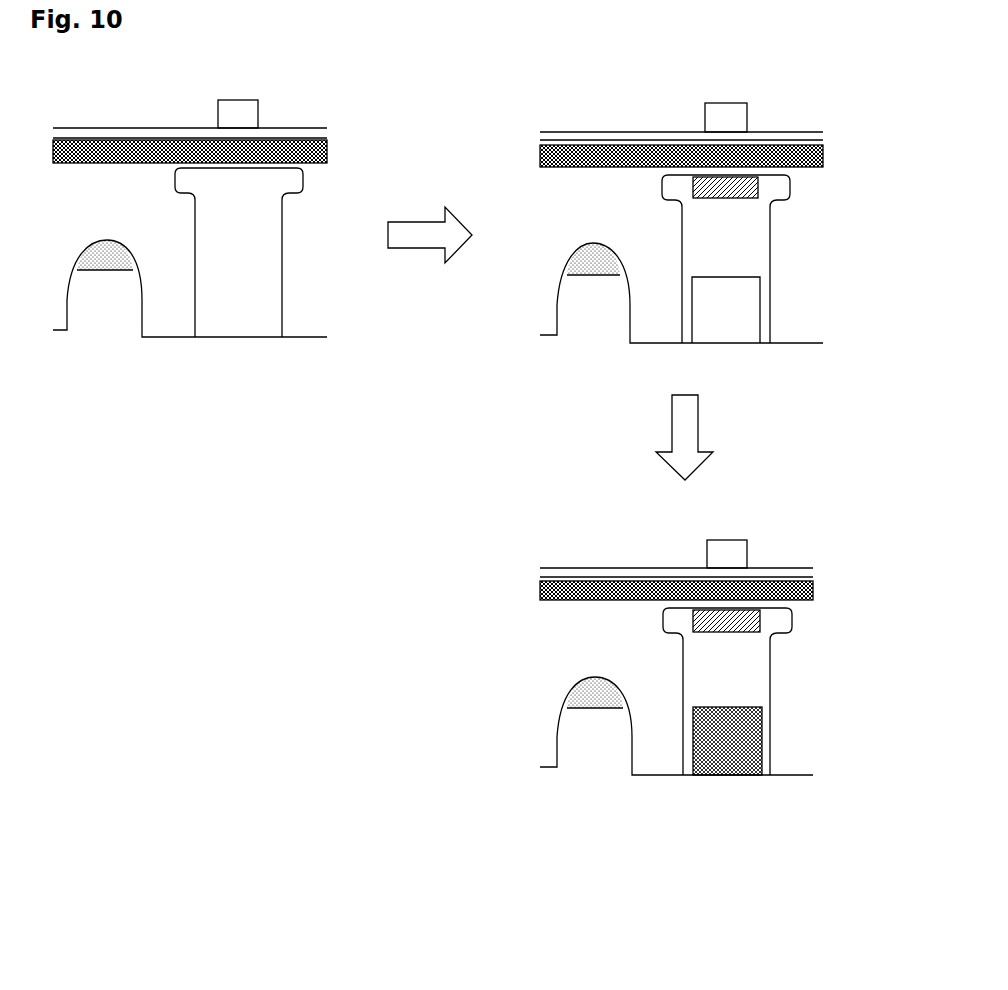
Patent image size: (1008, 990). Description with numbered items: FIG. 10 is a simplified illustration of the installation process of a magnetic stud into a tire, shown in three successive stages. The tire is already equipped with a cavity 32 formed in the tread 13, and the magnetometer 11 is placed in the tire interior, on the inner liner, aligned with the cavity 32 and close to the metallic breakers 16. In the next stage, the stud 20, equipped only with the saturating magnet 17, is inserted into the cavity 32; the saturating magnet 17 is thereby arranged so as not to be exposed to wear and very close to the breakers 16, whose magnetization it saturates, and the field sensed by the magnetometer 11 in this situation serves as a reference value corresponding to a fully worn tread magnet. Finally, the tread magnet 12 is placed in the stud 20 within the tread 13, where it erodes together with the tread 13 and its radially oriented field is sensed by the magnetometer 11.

The magnetometer 11 is at (240, 100).
The tread magnet 12 is at (708, 775).
The tread 13 is at (292, 323).
The breakers 16 is at (655, 580).
The saturating magnet 17 is at (750, 200).
The stud 20 is at (682, 232).
The cavity 32 is at (195, 225).